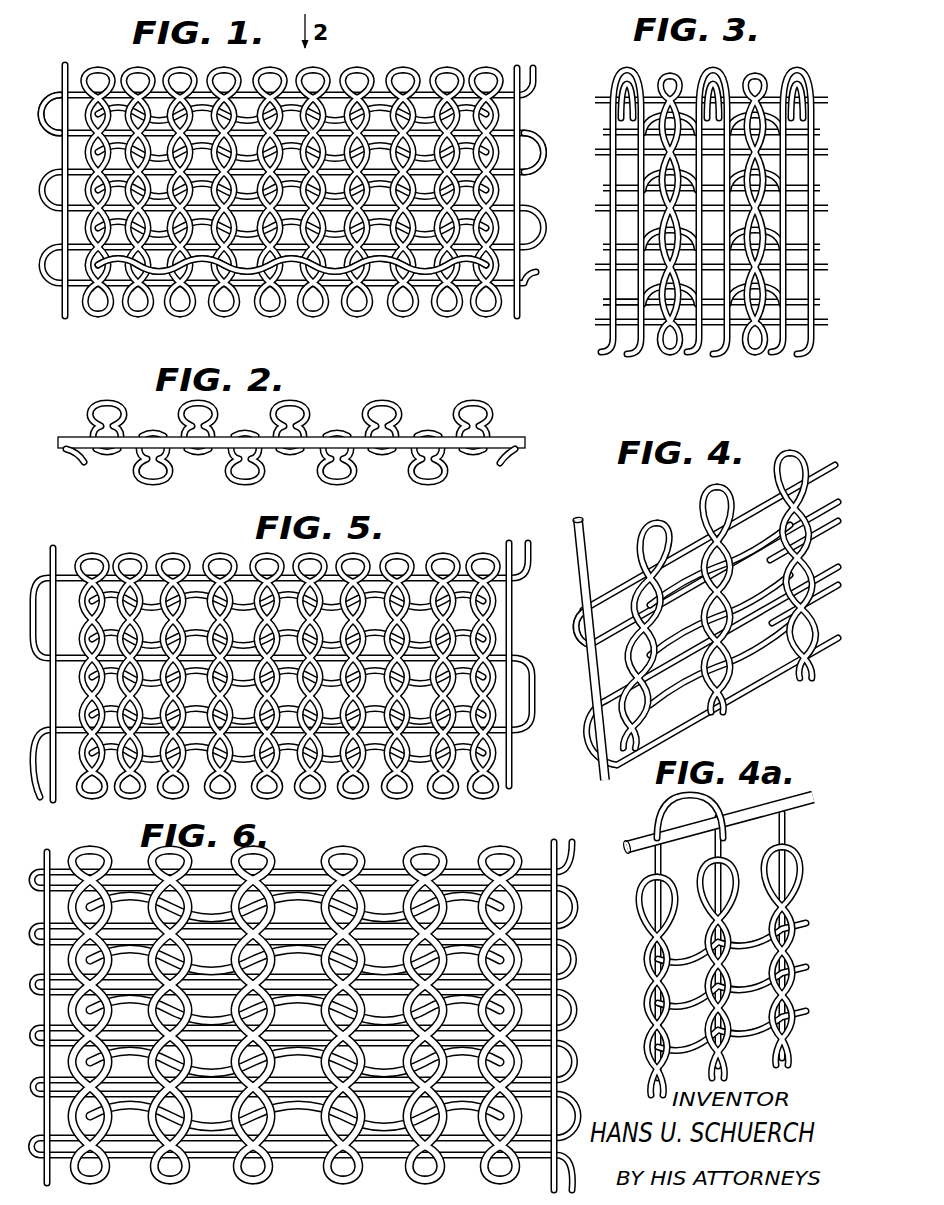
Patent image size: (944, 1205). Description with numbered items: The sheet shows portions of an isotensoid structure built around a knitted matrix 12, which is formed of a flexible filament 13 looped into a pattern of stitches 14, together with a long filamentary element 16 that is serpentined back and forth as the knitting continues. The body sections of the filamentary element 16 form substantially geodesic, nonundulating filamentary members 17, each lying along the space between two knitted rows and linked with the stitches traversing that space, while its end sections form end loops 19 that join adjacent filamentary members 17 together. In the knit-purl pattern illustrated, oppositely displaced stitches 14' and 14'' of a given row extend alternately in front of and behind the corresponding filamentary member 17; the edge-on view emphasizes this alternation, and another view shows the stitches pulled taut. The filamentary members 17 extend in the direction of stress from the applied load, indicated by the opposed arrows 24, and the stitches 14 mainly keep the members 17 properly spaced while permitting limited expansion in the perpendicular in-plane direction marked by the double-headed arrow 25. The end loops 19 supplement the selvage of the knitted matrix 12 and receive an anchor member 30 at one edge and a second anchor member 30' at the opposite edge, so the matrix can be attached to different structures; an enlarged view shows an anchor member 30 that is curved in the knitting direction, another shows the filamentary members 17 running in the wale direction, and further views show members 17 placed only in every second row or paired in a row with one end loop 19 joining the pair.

In FIG. 1, the knitted matrix 12 is at (457, 70).
In FIG. 3, the knitted matrix 12 is at (614, 287).
In FIG. 1, the flexible filament 13 is at (408, 80).
In FIG. 2, the flexible filament 13 is at (494, 460).
In FIG. 4, the flexible filament 13 is at (792, 657).
In FIG. 6, the flexible filament 13 is at (351, 872).
In FIG. 1, the stitches 14 is at (241, 178).
In FIG. 3, the stitches 14 is at (692, 198).
In FIG. 2, the stitches 14 is at (270, 463).
In FIG. 5, the stitches 14 is at (205, 658).
In FIG. 4A, the stitches 14 is at (766, 949).
In FIG. 1, the oppositely displaced stitch 14' is at (369, 178).
In FIG. 2, the oppositely displaced stitch 14' is at (363, 463).
In FIG. 4, the oppositely displaced stitch 14' is at (693, 599).
In FIG. 1, the oppositely displaced stitch 14'' is at (324, 178).
In FIG. 2, the oppositely displaced stitch 14'' is at (314, 411).
In FIG. 4, the oppositely displaced stitch 14'' is at (798, 550).
In FIG. 1, the filamentary element 16 is at (529, 128).
In FIG. 4, the filamentary element 16 is at (581, 601).
In FIG. 4A, the filamentary element 16 is at (785, 1027).
In FIG. 1, the filamentary members 17 is at (160, 78).
In FIG. 3, the filamentary members 17 is at (820, 94).
In FIG. 2, the filamentary members 17 is at (505, 440).
In FIG. 5, the filamentary members 17 is at (419, 575).
In FIG. 4, the filamentary members 17 is at (816, 472).
In FIG. 4A, the filamentary members 17 is at (786, 927).
In FIG. 6, the filamentary members 17 is at (299, 872).
In FIG. 1, the end loops 19 is at (534, 216).
In FIG. 4, the end loops 19 is at (574, 640).
In FIG. 4A, the end loops 19 is at (656, 808).
In FIG. 6, the end loops 19 is at (590, 952).
In FIG. 1, the opposed arrows 24 is at (567, 166).
In FIG. 1, the double-headed arrow 25 is at (388, 305).
In FIG. 3, the double-headed arrow 25 is at (580, 310).
In FIG. 1, the anchor member 30 is at (45, 177).
In FIG. 5, the anchor member 30 is at (87, 659).
In FIG. 4, the anchor member 30 is at (693, 615).
In FIG. 4A, the anchor member 30 is at (717, 817).
In FIG. 6, the anchor member 30 is at (74, 1006).
In FIG. 1, the anchor member 30' is at (539, 175).
In FIG. 5, the anchor member 30' is at (485, 655).
In FIG. 6, the anchor member 30' is at (516, 1009).